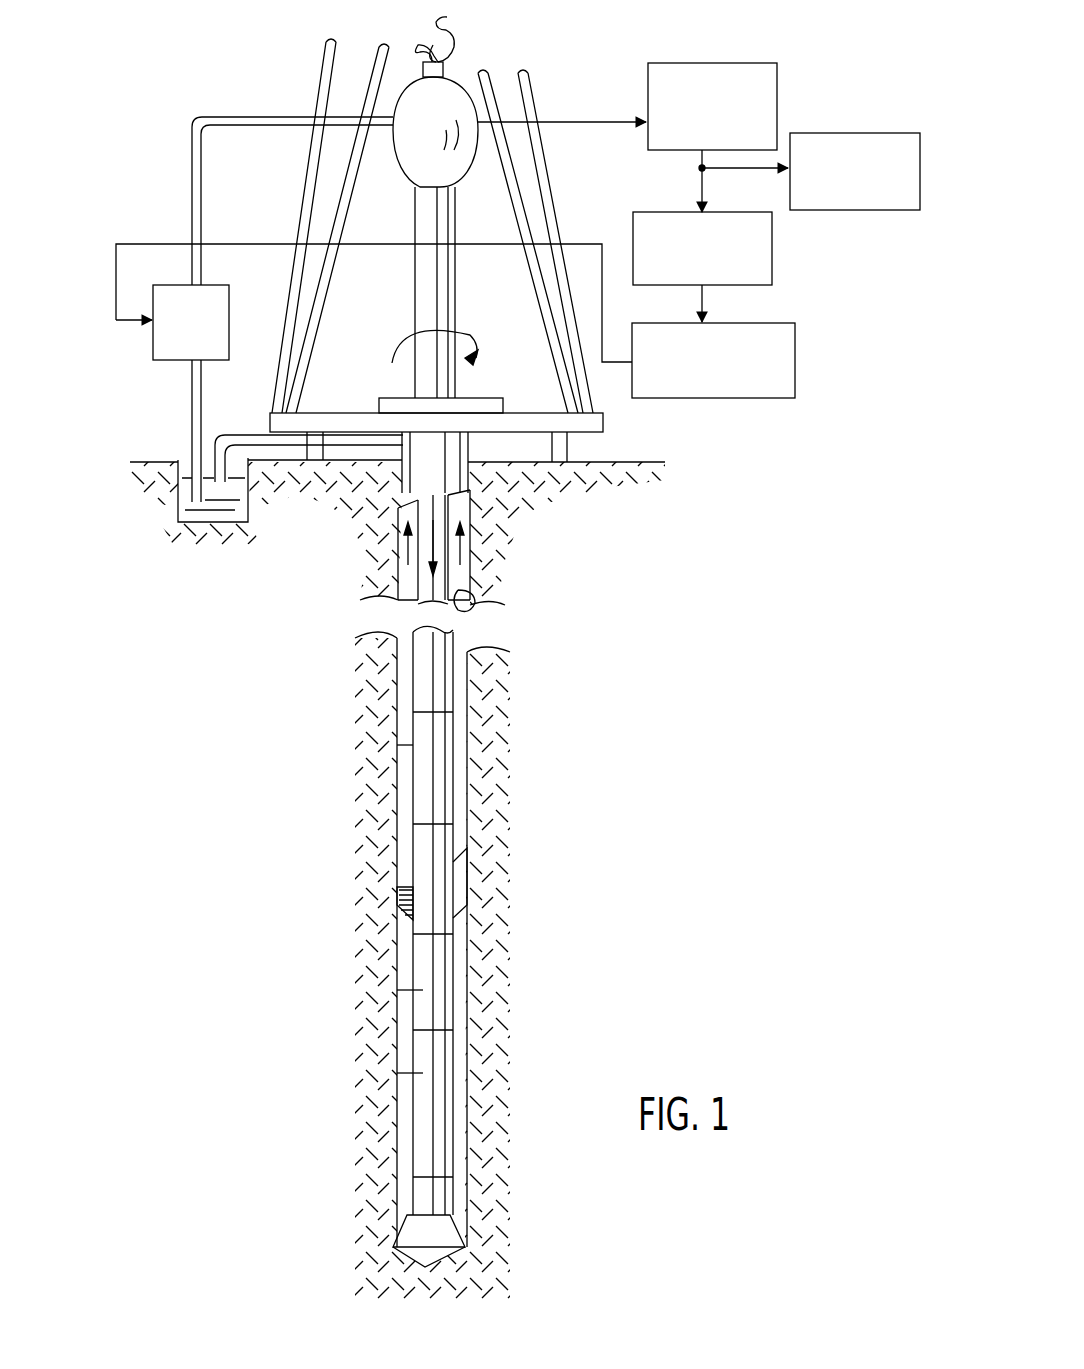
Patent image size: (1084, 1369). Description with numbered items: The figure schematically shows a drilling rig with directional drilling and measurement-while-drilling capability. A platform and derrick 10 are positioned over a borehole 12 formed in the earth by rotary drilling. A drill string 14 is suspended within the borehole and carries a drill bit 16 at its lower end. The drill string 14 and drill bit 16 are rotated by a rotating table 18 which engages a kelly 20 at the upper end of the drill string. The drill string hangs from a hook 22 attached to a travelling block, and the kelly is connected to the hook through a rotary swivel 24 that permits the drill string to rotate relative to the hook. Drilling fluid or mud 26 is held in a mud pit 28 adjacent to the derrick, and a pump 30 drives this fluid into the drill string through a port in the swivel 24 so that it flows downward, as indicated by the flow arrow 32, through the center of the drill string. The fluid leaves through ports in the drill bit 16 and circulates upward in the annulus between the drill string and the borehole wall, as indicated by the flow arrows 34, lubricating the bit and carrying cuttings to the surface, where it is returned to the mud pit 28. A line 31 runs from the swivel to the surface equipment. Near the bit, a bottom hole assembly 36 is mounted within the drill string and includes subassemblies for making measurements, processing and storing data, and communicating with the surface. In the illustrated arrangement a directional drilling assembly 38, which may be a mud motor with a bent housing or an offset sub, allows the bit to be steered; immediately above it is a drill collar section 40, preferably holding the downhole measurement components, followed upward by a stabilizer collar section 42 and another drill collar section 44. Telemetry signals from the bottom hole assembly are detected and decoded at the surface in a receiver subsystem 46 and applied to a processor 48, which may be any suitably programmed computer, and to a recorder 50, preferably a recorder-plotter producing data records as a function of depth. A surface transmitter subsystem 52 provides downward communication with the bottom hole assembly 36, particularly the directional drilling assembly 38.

The platform and derrick 10 is at (640, 426).
The borehole 12 is at (470, 605).
The drill string 14 is at (425, 682).
The drill bit 16 is at (420, 1238).
The rotating table 18 is at (485, 398).
The kelly 20 is at (437, 216).
The hook 22 is at (452, 45).
The rotary swivel 24 is at (410, 175).
The drilling fluid or mud 26 is at (215, 508).
The mud pit 28 is at (178, 492).
The pump 30 is at (215, 295).
The signal line 31 is at (482, 128).
The flow arrow 32 is at (410, 560).
The flow arrows 34 is at (462, 560).
The bottom hole assembly 36 is at (740, 655).
The directional drilling assembly 38 is at (423, 1073).
The drill collar section 40 is at (423, 990).
The stabilizer collar section 42 is at (420, 888).
The drill collar section 44 is at (413, 746).
The receiver subsystem 46 is at (690, 65).
The processor 48 is at (772, 250).
The recorder 50 is at (860, 135).
The surface transmitter subsystem 52 is at (795, 355).